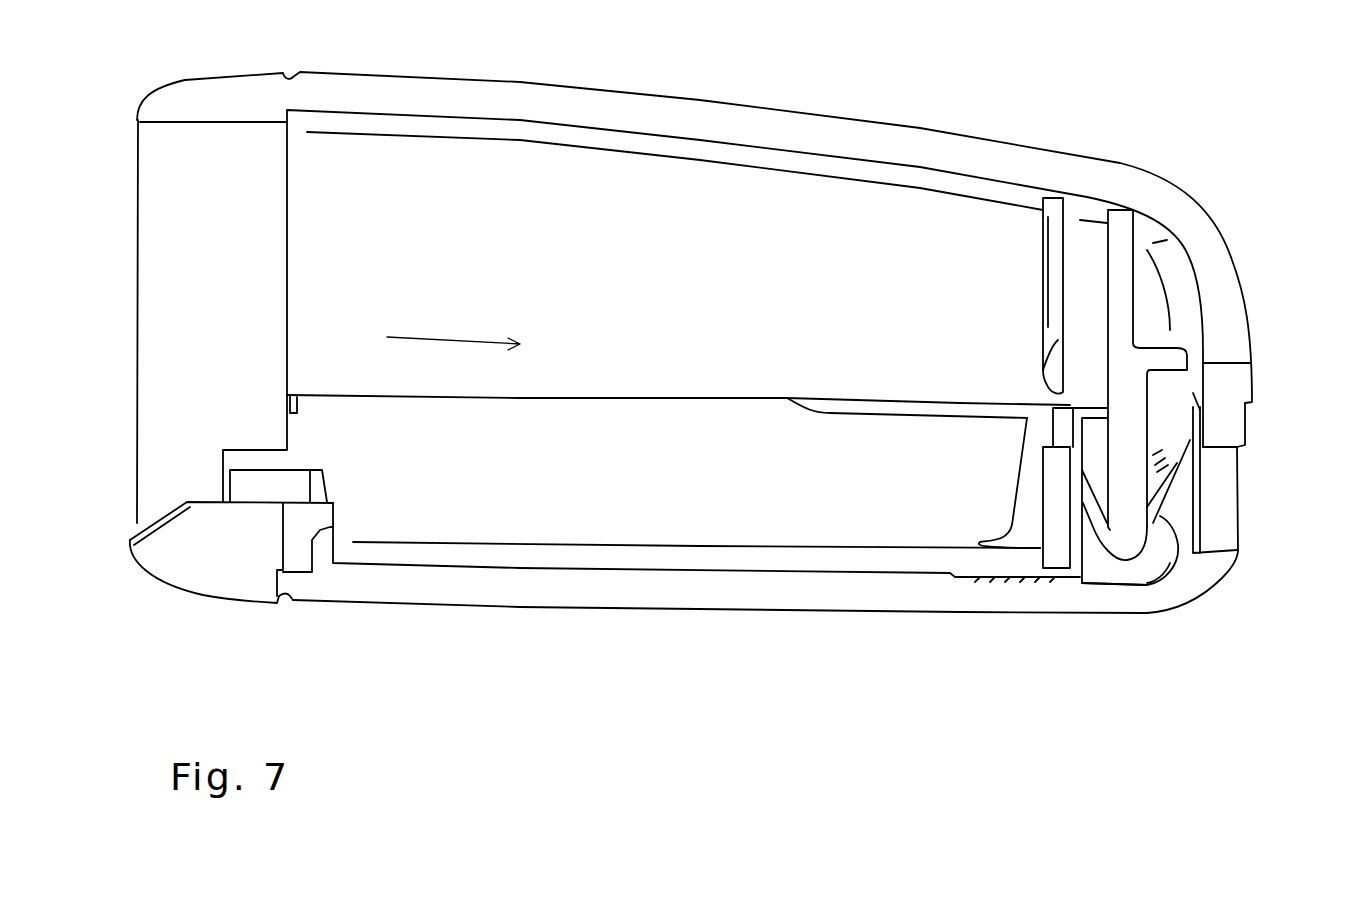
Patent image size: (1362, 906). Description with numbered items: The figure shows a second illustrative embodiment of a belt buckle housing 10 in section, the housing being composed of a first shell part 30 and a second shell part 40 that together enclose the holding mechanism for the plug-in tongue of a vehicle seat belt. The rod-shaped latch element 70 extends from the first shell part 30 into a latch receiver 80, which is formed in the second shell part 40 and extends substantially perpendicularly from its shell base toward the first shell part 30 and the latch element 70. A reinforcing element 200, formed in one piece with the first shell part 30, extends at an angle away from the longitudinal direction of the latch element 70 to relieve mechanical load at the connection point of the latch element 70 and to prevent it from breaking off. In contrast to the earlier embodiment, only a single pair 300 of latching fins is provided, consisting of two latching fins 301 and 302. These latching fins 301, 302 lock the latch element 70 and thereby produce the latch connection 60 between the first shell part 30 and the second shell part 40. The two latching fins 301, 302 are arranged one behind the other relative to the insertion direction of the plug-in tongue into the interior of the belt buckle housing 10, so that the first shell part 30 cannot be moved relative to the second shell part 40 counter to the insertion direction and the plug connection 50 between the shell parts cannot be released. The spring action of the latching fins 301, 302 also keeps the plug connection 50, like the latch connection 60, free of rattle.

The belt buckle housing 10 is at (737, 422).
The first shell part 30 is at (828, 140).
The second shell part 40 is at (740, 593).
The plug connection 50 is at (291, 630).
The latch connection 60 is at (996, 300).
The latch element 70 is at (1132, 547).
The latch receiver 80 is at (1105, 572).
The reinforcing element 200 is at (1180, 348).
The pair of latching fins 300 is at (1200, 455).
The latching fin 301 is at (1077, 587).
The latching fin 302 is at (1173, 570).